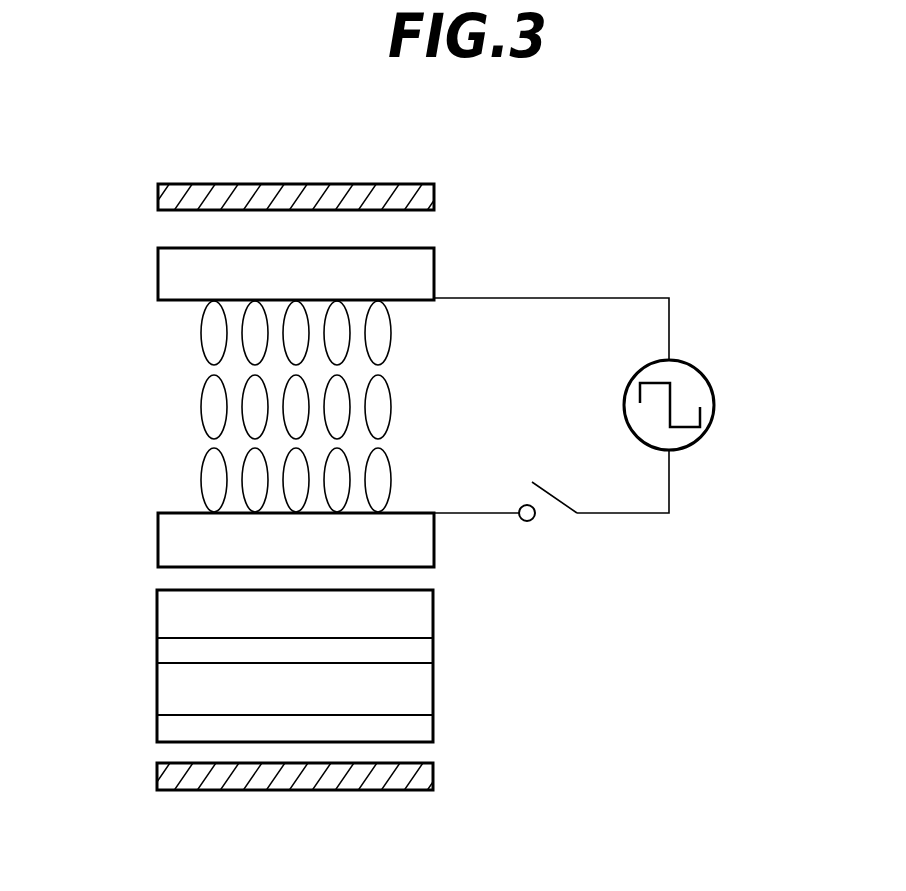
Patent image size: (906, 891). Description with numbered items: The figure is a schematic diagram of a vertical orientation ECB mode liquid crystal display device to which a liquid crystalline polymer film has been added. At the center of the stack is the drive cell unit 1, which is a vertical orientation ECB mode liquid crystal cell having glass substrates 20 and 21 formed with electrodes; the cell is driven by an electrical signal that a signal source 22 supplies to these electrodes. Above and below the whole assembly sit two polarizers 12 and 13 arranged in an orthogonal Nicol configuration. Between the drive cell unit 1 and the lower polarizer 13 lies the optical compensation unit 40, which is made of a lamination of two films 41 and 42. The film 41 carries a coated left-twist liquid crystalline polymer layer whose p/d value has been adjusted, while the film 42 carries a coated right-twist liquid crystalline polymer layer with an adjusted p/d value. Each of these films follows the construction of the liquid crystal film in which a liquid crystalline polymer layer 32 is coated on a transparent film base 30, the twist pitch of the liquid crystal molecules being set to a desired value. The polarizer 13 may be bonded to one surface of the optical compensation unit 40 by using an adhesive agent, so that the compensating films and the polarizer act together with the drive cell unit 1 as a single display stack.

The drive cell unit 1 is at (501, 406).
The polarizer 12 is at (434, 200).
The polarizer 13 is at (343, 774).
The glass substrate 20 is at (434, 273).
The glass substrate 21 is at (434, 537).
The driving power source 22 is at (689, 370).
The transparent film base 30 is at (433, 688).
The liquid crystalline polymer layer 32 is at (433, 610).
The optical compensation unit 40 is at (373, 690).
The film 41 is at (301, 626).
The film 42 is at (301, 701).